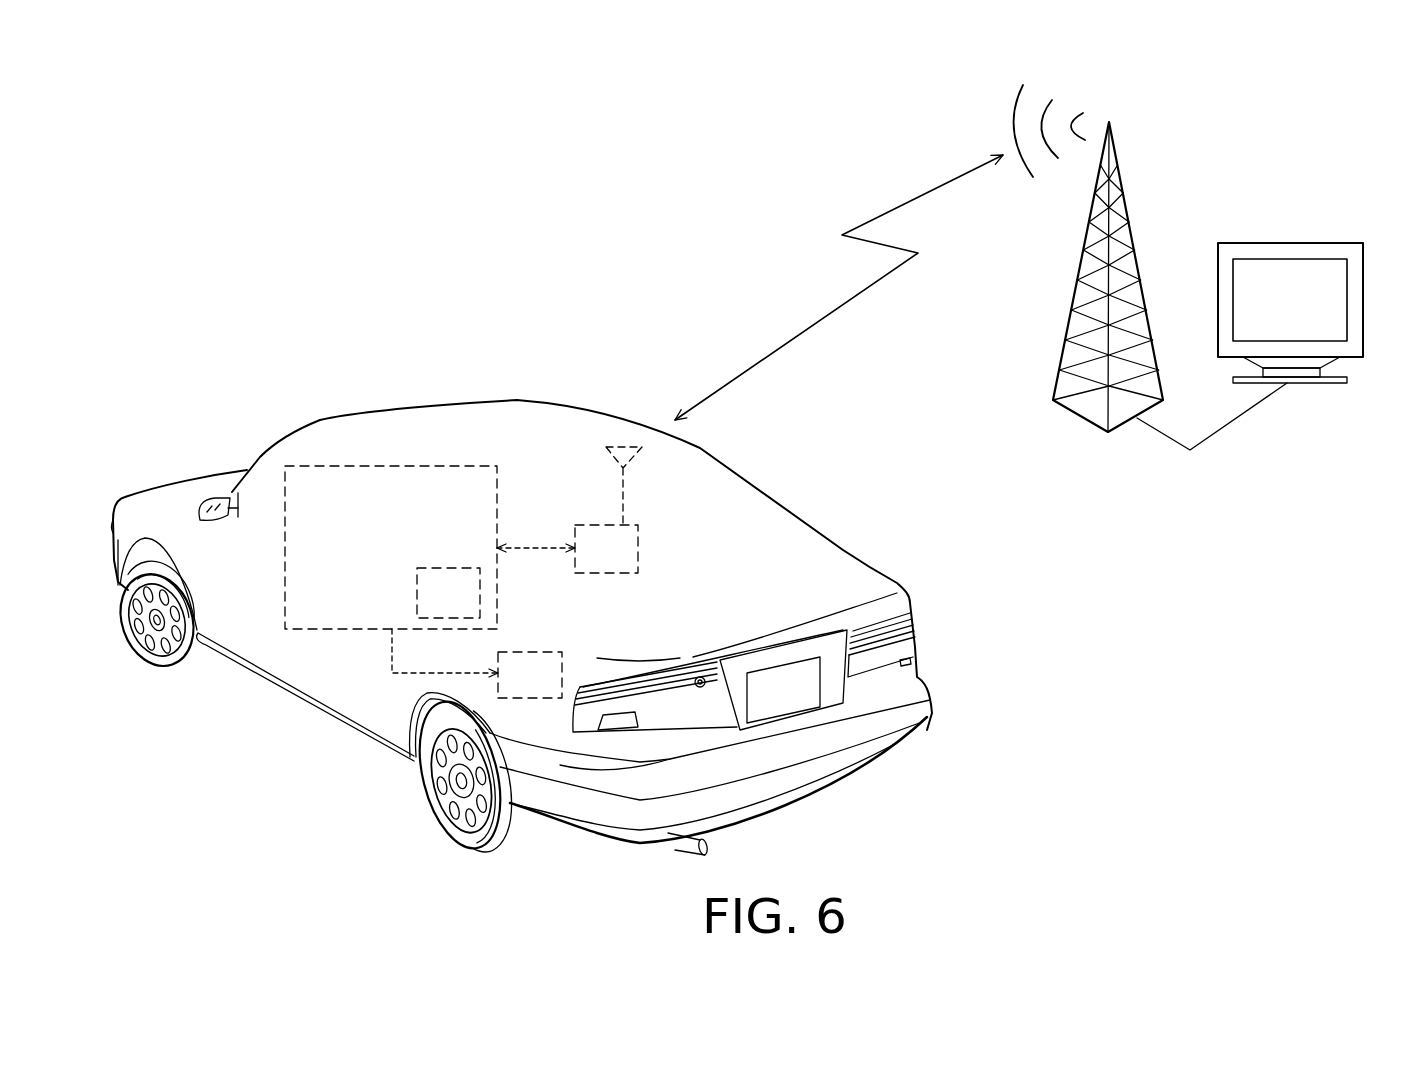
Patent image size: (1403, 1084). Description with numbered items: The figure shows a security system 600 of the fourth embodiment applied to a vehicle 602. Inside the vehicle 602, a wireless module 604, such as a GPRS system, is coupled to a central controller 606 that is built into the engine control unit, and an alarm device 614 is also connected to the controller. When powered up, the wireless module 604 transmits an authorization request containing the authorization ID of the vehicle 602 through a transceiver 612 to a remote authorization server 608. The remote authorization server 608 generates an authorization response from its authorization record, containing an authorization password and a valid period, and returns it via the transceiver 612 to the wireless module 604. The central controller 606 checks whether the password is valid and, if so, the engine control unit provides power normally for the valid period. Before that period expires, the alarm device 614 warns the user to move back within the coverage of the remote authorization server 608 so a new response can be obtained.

The security system 600 is at (1381, 93).
The vehicle 602 is at (820, 575).
The wireless module 604 is at (629, 562).
The central controller 606 is at (473, 605).
The remote authorization server 608 is at (1292, 243).
The transceiver 612 is at (1133, 218).
The alarm device 614 is at (553, 688).